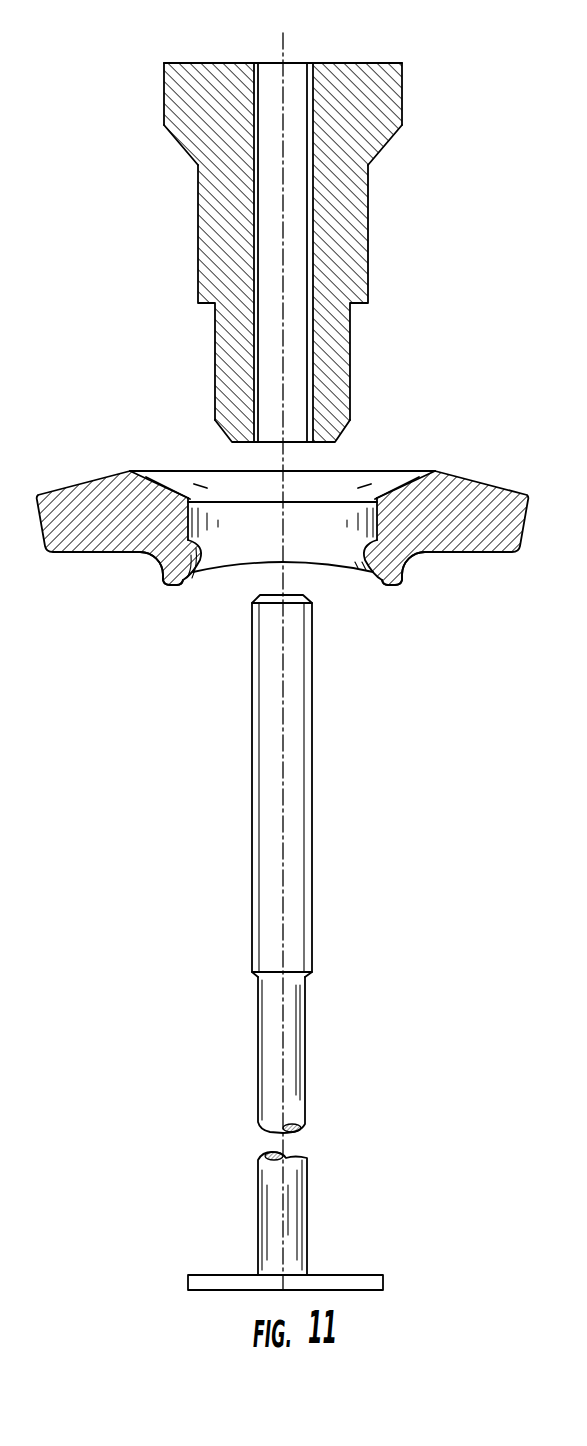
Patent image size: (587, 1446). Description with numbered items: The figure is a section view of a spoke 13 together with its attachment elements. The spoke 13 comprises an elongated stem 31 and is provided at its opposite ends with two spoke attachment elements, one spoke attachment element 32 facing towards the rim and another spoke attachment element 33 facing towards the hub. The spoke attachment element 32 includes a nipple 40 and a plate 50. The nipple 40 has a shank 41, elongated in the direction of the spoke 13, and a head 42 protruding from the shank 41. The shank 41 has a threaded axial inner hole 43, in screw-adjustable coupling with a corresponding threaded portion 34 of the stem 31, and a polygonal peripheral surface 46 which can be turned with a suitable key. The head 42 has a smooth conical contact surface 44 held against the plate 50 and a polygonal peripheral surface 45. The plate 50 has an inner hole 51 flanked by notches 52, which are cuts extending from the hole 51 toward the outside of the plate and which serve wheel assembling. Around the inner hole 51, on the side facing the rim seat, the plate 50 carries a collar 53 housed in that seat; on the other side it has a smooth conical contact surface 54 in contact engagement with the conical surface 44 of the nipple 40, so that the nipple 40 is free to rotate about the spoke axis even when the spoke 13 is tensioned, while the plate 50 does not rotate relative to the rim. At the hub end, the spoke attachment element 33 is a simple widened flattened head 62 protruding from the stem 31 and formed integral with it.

The spoke 13 is at (340, 864).
The stem 31 is at (305, 1027).
The spoke attachment element 32 is at (294, 221).
The spoke attachment element 33 is at (337, 1231).
The threaded portion 34 is at (312, 752).
The nipple 40 is at (278, 221).
The shank 41 is at (208, 238).
The head 42 is at (385, 105).
The threaded axial inner hole 43 is at (308, 80).
The conical contact surface 44 is at (385, 148).
The polygonal peripheral surface 45 is at (163, 100).
The polygonal peripheral surface 46 is at (340, 390).
The plate 50 is at (292, 508).
The inner hole 51 is at (189, 544).
The notches 52 is at (147, 476).
The collar 53 is at (405, 567).
The conical contact surface 54 is at (170, 482).
The widened flattened head 62 is at (215, 1275).